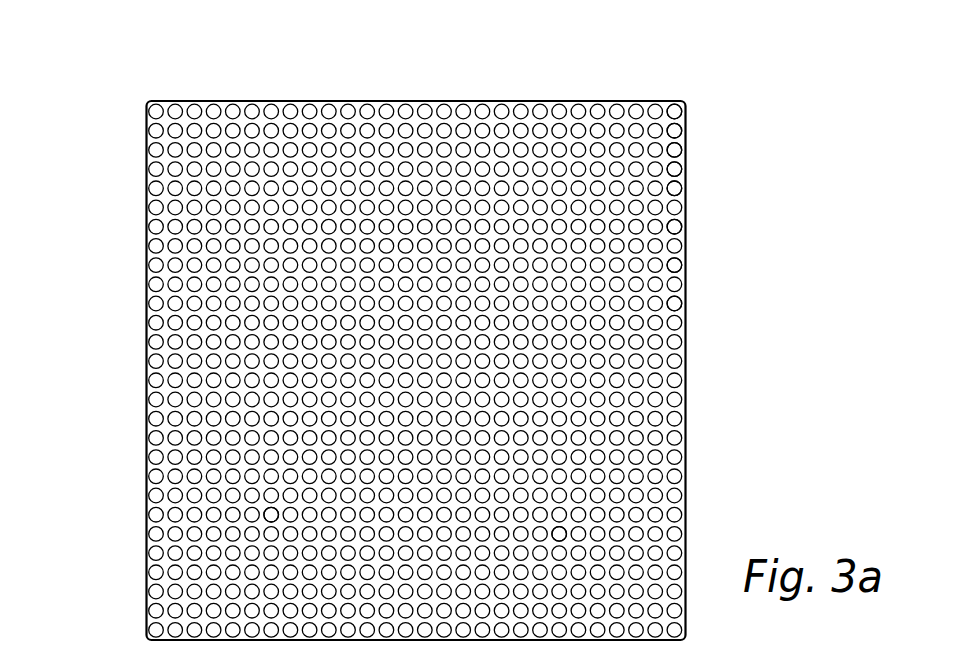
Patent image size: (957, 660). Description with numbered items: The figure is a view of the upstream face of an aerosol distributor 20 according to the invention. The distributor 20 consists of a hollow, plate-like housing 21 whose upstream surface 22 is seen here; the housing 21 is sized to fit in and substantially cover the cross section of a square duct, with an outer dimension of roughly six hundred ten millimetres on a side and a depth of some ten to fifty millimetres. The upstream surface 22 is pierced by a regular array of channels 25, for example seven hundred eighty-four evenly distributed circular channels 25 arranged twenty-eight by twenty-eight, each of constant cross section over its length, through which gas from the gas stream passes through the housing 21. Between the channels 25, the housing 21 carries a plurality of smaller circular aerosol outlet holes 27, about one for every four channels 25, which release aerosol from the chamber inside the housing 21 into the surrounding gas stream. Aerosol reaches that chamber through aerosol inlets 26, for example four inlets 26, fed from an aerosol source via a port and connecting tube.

The aerosol distributor 20 is at (95, 66).
The housing 21 is at (146, 235).
The upstream surface 22 is at (168, 369).
The channels 25 is at (681, 111).
The aerosol inlet 26 is at (266, 522).
The aerosol outlet holes 27 is at (673, 199).